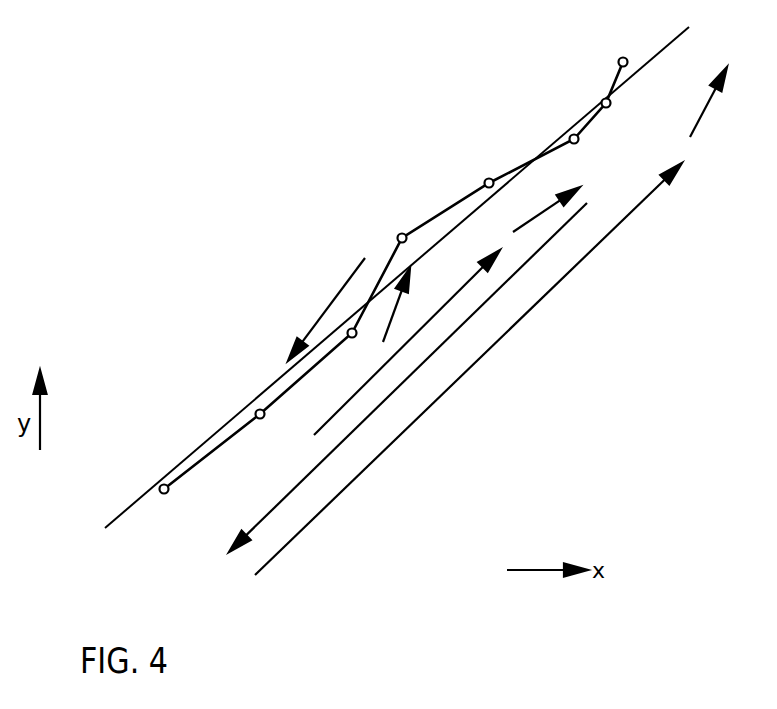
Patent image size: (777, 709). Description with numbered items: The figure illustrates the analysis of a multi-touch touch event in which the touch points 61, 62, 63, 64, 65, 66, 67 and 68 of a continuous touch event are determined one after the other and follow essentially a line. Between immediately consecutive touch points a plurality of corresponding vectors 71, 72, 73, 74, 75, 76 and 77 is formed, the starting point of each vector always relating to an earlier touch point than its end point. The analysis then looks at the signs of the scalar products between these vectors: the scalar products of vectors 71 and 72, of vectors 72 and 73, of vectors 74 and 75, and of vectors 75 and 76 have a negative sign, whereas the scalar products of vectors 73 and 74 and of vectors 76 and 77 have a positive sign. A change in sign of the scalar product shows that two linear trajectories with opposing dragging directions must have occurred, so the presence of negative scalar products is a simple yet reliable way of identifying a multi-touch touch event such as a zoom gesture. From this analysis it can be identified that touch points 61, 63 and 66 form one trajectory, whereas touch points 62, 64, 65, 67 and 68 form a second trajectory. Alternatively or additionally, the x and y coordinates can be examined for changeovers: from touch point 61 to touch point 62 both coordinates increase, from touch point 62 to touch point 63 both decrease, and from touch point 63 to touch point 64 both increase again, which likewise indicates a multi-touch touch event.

The touch point 61 is at (358, 348).
The touch point 62 is at (388, 226).
The touch point 63 is at (263, 430).
The touch point 64 is at (490, 170).
The touch point 65 is at (575, 156).
The touch point 66 is at (166, 505).
The touch point 67 is at (622, 116).
The touch point 68 is at (628, 47).
The vector 71 is at (406, 305).
The vector 72 is at (326, 309).
The vector 73 is at (407, 342).
The vector 74 is at (546, 209).
The vector 75 is at (408, 377).
The vector 76 is at (468, 369).
The vector 77 is at (712, 102).